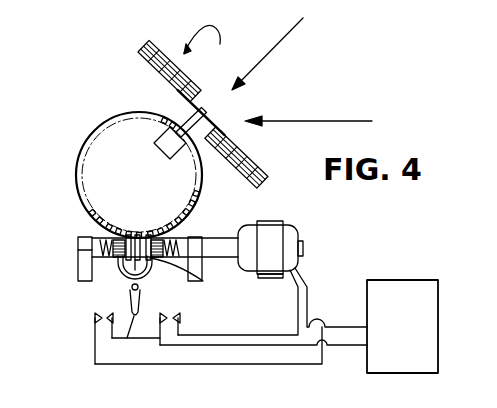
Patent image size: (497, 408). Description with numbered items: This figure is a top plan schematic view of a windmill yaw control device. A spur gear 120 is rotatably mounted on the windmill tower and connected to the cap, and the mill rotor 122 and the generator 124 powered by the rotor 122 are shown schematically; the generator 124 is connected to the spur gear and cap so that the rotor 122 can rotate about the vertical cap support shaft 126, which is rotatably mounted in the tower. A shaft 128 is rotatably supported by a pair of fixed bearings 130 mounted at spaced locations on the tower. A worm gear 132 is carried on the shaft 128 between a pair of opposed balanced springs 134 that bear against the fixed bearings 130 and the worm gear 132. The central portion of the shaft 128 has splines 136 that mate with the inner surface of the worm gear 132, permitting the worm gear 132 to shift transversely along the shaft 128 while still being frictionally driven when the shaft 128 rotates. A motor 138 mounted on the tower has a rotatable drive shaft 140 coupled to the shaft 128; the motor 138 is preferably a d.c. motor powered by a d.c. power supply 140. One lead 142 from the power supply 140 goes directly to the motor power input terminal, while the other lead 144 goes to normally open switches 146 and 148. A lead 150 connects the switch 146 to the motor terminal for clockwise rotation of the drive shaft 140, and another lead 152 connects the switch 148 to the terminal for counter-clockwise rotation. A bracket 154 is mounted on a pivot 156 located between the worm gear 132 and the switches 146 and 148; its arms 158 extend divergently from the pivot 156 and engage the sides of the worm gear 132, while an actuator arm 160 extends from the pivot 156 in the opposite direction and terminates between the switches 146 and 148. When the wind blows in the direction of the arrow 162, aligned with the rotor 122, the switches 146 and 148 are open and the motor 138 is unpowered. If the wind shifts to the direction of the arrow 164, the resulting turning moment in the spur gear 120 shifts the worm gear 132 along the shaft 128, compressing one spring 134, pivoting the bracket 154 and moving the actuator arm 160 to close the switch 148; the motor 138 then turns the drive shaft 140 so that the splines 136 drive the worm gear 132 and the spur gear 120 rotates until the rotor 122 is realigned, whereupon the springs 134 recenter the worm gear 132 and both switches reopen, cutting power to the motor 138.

The spur gear 120 is at (100, 125).
The mill rotor 122 is at (203, 107).
The generator 124 is at (168, 140).
The vertical cap support shaft 126 is at (143, 172).
The shaft 128 is at (97, 237).
The fixed bearings 130 is at (190, 212).
The worm gear 132 is at (121, 237).
The balanced springs 134 is at (176, 232).
The splines 136 is at (193, 278).
The motor 138 is at (291, 234).
The drive shaft 140 is at (213, 245).
The lead 142 is at (345, 326).
The lead 144 is at (347, 348).
The switch 146 is at (176, 312).
The switch 148 is at (95, 319).
The lead 150 is at (287, 334).
The lead 152 is at (247, 364).
The bracket 154 is at (126, 287).
The pivot 156 is at (150, 283).
The arms 158 is at (79, 269).
The actuator arm 160 is at (133, 339).
The arrow 162 is at (292, 29).
The arrow 164 is at (333, 121).